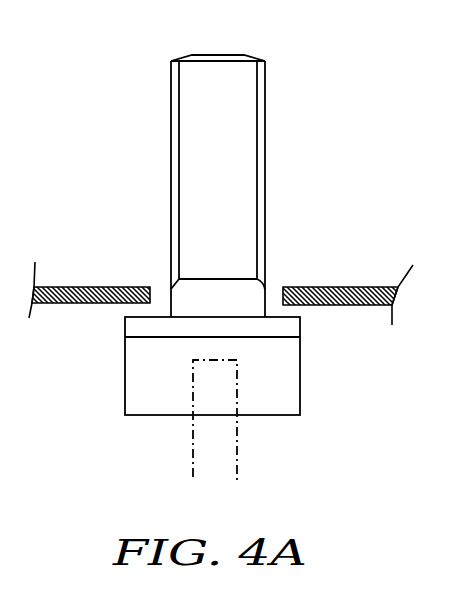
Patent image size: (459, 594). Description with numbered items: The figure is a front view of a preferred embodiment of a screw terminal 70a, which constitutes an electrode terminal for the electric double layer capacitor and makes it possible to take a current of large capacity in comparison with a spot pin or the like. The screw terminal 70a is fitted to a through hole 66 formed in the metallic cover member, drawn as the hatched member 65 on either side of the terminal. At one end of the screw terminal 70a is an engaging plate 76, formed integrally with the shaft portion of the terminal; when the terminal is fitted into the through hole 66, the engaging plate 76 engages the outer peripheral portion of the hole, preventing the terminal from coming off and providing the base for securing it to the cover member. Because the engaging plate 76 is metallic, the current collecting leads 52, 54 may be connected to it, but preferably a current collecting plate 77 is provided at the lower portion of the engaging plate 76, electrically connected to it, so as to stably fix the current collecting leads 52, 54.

The screw terminal 70a is at (170, 143).
The through hole 66 is at (277, 275).
The plate (hatched member) 65 is at (82, 287).
The engaging plate 76 is at (153, 332).
The current collecting plate 77 is at (206, 366).
The current collecting lead 52 is at (312, 421).
The current collecting lead 54 is at (238, 474).